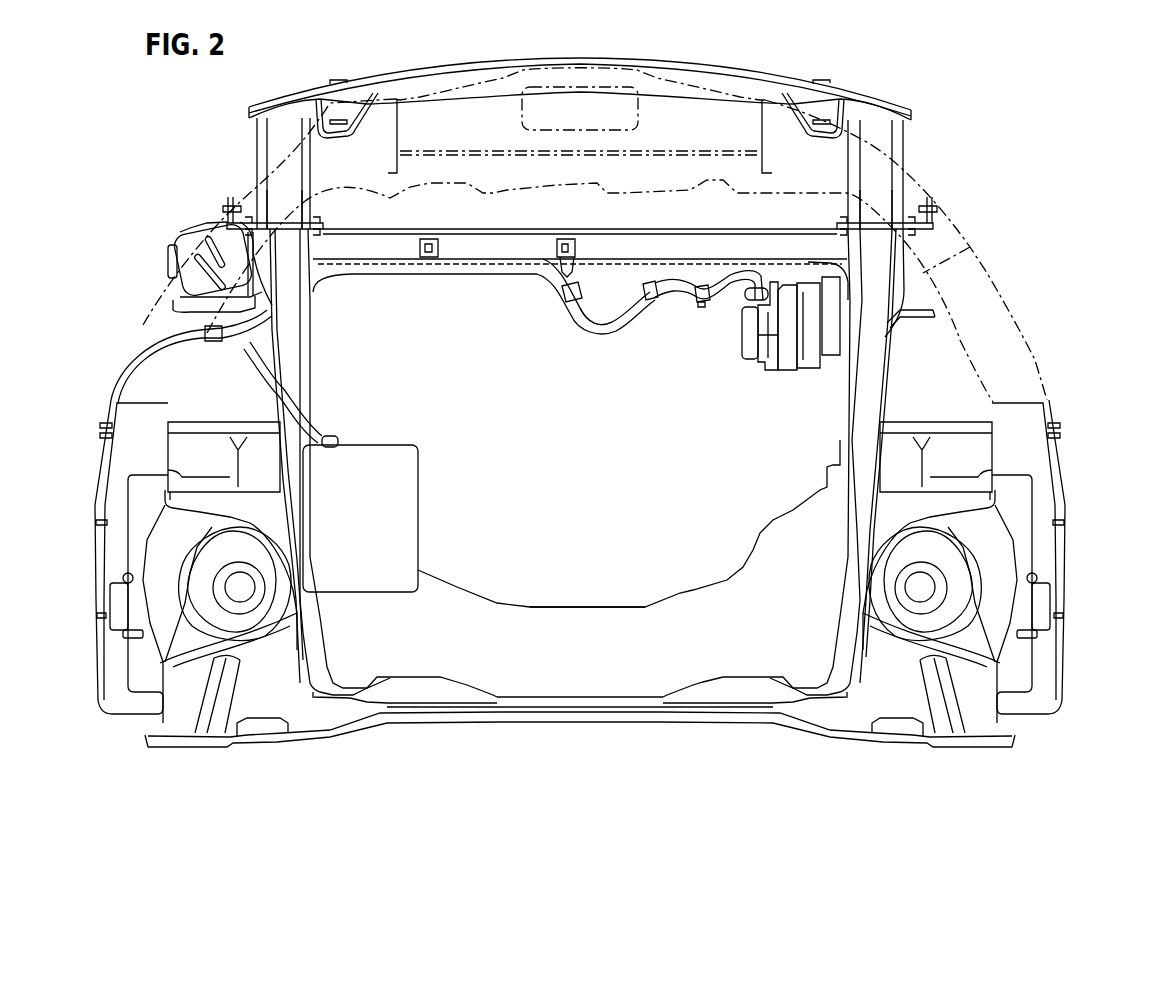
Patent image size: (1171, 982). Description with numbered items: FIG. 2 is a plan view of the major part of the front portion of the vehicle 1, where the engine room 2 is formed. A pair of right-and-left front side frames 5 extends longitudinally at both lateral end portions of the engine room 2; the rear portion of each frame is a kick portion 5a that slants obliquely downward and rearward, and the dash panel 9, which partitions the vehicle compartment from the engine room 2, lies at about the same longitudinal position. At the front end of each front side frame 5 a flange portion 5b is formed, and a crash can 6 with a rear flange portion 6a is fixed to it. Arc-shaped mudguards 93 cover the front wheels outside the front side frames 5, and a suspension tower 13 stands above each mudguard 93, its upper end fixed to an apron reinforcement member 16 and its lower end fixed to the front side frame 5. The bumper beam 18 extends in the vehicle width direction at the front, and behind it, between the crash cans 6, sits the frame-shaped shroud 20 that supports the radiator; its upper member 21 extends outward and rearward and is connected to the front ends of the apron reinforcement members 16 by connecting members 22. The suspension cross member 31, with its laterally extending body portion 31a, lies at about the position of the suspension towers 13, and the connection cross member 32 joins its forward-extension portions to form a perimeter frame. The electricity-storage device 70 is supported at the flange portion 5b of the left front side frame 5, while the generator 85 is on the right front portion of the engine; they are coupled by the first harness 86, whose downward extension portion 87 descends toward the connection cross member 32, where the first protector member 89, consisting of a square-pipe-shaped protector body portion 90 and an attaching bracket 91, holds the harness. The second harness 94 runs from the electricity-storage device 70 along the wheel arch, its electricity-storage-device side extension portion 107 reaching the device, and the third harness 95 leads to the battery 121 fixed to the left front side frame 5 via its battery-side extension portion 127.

The vehicle 1 is at (903, 72).
The engine room 2 is at (610, 455).
The front side frame 5 is at (302, 397).
The kick portion 5a is at (317, 645).
The flange portion 5b is at (323, 233).
The crash can 6 is at (290, 157).
The flange portion 6a is at (291, 220).
The dash panel 9 is at (583, 717).
The suspension tower 13 is at (207, 587).
The apron reinforcement member 16 is at (118, 423).
The bumper beam 18 is at (452, 87).
The shroud 20 is at (697, 167).
The upper member 21 is at (660, 130).
The connecting member 22 is at (143, 325).
The suspension cross member 31 is at (653, 588).
The body portion 31a is at (567, 620).
The connection cross member 32 is at (603, 267).
The electricity-storage device 70 is at (187, 233).
The generator 85 is at (790, 364).
The first harness 86 is at (588, 333).
The downward extension portion 87 is at (678, 288).
The first protector member 89 is at (388, 272).
The protector body portion 90 is at (485, 267).
The attaching bracket 91 is at (434, 239).
The mudguard 93 is at (217, 442).
The second harness 94 is at (264, 356).
The third harness 95 is at (336, 394).
The electricity-storage-device side extension portion 107 is at (280, 342).
The battery 121 is at (400, 510).
The battery-side extension portion 127 is at (282, 375).